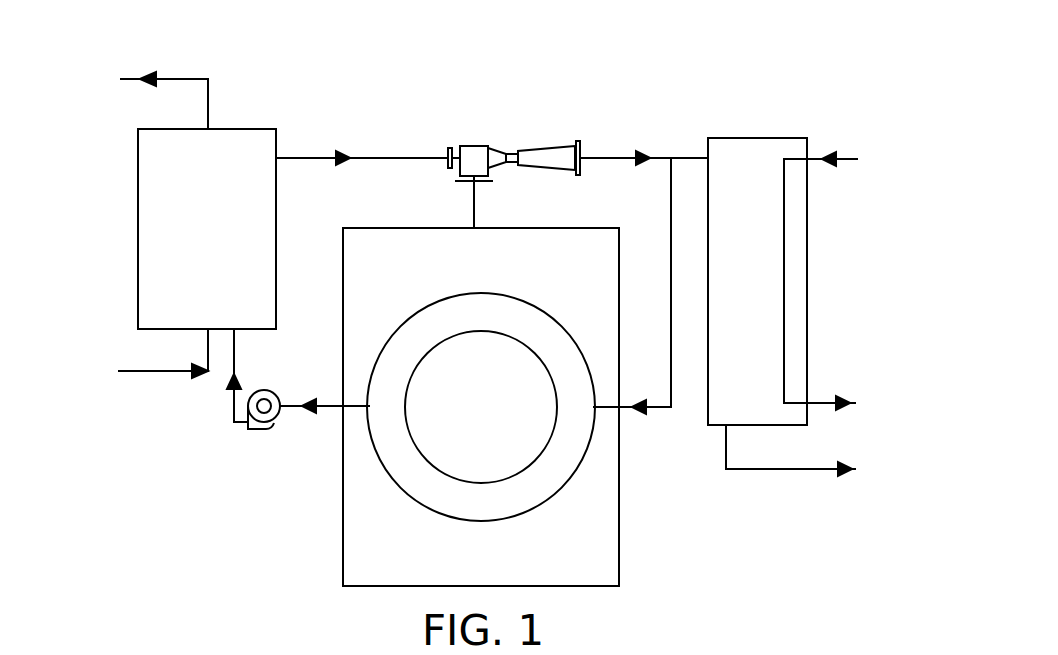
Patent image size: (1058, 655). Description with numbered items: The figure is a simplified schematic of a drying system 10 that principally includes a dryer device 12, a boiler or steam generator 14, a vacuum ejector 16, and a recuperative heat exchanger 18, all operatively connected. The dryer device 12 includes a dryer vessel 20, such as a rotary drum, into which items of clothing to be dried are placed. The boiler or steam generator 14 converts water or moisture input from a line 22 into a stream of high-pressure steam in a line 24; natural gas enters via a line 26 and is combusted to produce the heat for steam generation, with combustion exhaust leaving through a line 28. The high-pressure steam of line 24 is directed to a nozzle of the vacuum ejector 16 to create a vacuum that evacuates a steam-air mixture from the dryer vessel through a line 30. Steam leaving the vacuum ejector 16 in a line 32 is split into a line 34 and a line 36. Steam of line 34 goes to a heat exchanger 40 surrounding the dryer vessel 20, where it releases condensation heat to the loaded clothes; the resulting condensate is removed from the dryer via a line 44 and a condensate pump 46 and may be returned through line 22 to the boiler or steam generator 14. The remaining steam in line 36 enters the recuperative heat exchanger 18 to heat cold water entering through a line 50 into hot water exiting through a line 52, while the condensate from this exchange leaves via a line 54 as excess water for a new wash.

The system 10 is at (646, 68).
The dryer device 12 is at (619, 538).
The boiler or steam generator 14 is at (138, 261).
The vacuum ejector 16 is at (503, 160).
The recuperative heat exchanger 18 is at (780, 138).
The dryer vessel 20 is at (507, 332).
The line 22 is at (233, 399).
The line 24 is at (300, 158).
The line 26 is at (125, 371).
The line 28 is at (178, 78).
The line 30 is at (474, 202).
The line 32 is at (613, 158).
The line 34 is at (671, 218).
The line 36 is at (693, 158).
The heat exchanger 40 is at (568, 482).
The line 44 is at (332, 406).
The condensate pump 46 is at (258, 429).
The line 50 is at (823, 157).
The line 52 is at (856, 405).
The line 54 is at (772, 470).